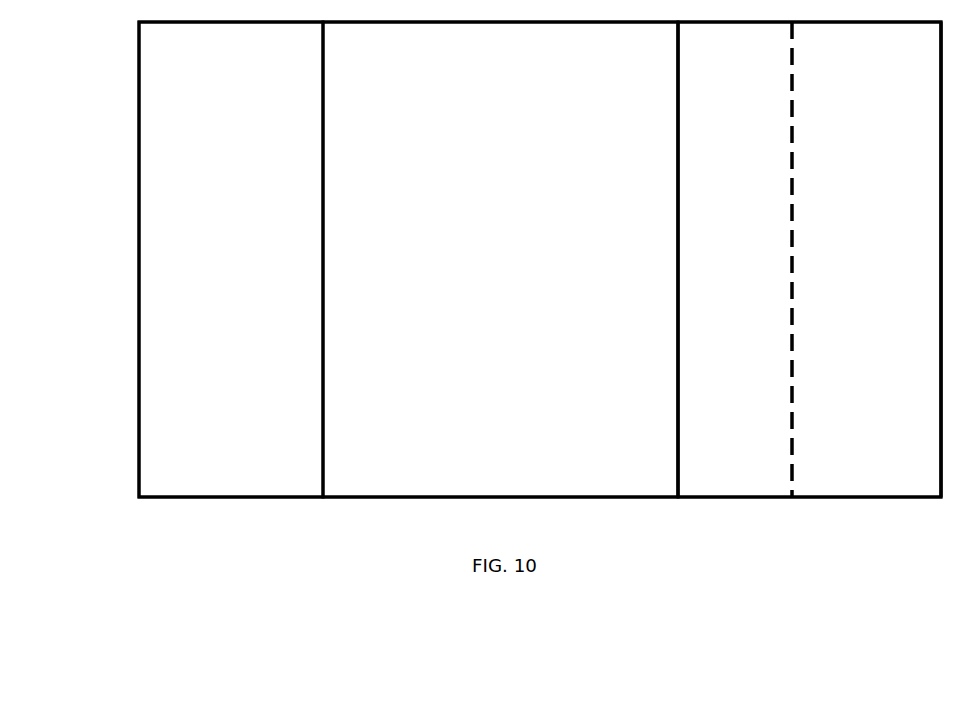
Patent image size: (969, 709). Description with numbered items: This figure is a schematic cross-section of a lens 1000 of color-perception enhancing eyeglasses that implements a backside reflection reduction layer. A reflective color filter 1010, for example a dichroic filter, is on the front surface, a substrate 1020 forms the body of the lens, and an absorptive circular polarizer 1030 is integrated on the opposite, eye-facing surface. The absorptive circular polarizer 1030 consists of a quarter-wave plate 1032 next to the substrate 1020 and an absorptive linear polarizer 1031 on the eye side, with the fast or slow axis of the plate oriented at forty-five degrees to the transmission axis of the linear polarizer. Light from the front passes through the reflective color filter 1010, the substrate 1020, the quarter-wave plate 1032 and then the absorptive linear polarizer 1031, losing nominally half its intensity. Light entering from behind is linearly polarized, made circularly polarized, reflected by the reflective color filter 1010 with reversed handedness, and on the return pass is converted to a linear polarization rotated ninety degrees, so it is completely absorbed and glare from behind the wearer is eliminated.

The lens 1000 is at (94, 97).
The reflective color filter 1010 is at (237, 483).
The substrate 1020 is at (458, 472).
The absorptive circular polarizer 1030 is at (933, 515).
The absorptive linear polarizer 1031 is at (866, 259).
The quarter-wave plate 1032 is at (735, 259).